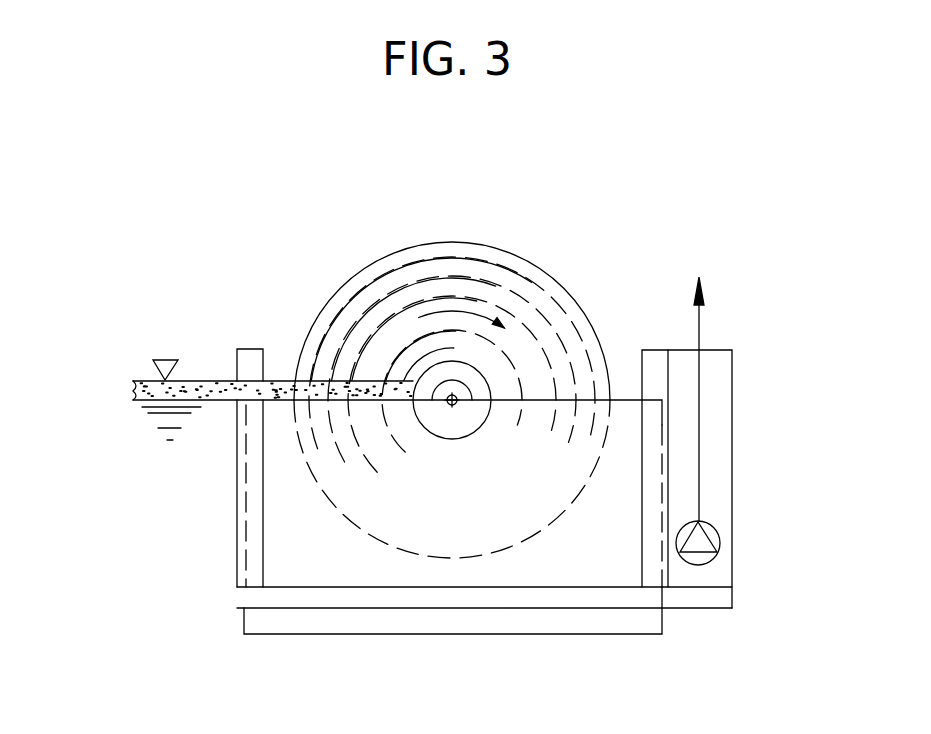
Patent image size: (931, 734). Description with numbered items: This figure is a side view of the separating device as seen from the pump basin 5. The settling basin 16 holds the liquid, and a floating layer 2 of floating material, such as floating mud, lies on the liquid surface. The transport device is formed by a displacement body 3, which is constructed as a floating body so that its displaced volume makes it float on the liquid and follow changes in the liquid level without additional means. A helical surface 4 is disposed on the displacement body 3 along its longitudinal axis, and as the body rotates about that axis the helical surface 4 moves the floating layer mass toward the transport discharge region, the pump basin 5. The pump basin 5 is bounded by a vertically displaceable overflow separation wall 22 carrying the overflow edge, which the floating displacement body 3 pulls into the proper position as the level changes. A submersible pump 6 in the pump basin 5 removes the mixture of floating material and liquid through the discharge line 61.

The floating layer 2 is at (211, 390).
The displacement body 3 is at (432, 370).
The helical surface 4 is at (462, 275).
The pump basin 5 is at (712, 578).
The submersible pump 6 is at (715, 528).
The settling basin 16 is at (203, 523).
The overflow separation wall 22 is at (577, 553).
The discharge line 61 is at (699, 327).